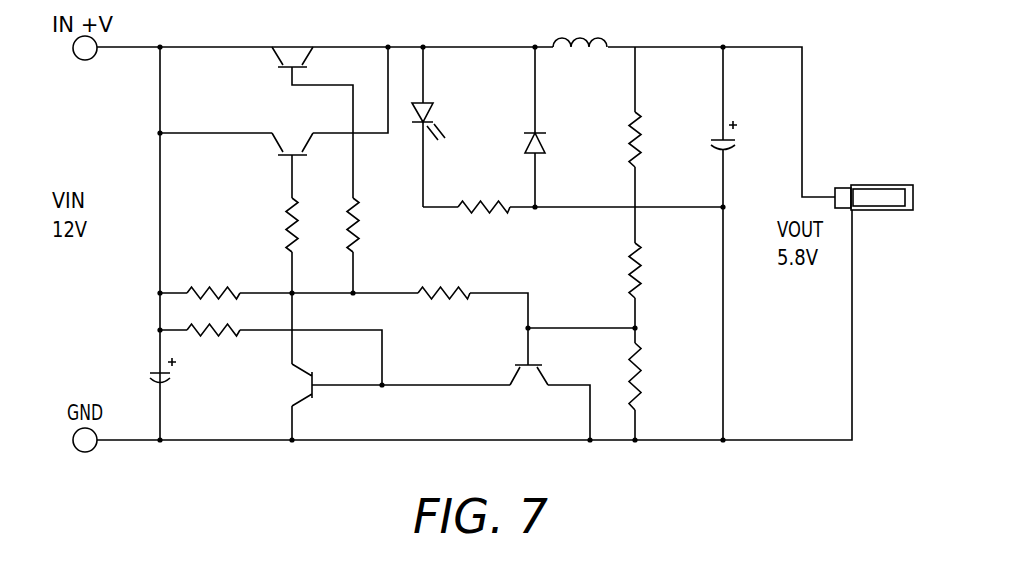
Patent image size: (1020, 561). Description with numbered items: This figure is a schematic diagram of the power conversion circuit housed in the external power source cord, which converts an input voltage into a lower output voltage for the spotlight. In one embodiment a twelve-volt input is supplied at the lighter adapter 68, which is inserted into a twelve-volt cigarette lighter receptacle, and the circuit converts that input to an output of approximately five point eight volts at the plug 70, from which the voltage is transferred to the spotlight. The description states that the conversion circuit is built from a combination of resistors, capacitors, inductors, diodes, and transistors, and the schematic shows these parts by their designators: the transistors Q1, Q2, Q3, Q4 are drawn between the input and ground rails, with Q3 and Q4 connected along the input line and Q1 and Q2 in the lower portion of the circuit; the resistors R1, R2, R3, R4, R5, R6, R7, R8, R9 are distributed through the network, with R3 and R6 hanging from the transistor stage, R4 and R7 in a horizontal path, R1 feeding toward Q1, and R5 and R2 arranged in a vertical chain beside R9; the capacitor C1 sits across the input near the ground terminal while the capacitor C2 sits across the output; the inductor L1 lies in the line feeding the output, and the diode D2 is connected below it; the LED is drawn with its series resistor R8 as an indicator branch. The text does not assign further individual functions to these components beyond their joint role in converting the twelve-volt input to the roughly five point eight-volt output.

The lighter adapter 68 is at (83, 60).
The plug 70 is at (872, 184).
The transistor Q1 9014C Q1 is at (273, 385).
The transistor Q2 9014C Q2 is at (527, 391).
The transistor Q3 8550 Q3 is at (300, 109).
The transistor Q4 8550 Q4 is at (288, 152).
The resistor R1 10K R1 is at (222, 343).
The resistor R2 2K2 R2 is at (636, 381).
The resistor R3 680R R3 is at (305, 220).
The resistor R4 10K R4 is at (222, 277).
The resistor R5 15K R5 is at (636, 270).
The resistor R6 680R R6 is at (366, 220).
The resistor R7 1M R7 is at (445, 277).
The resistor R8 680R R8 is at (486, 191).
The resistor R9 3K9 R9 is at (636, 139).
The capacitor C1 47u C1 is at (146, 377).
The capacitor C2 10u C2 is at (727, 142).
The diode D2 FR101 D2 is at (535, 145).
The inductor L1 coil L1 is at (587, 27).
The light emitting diode LED is at (439, 116).